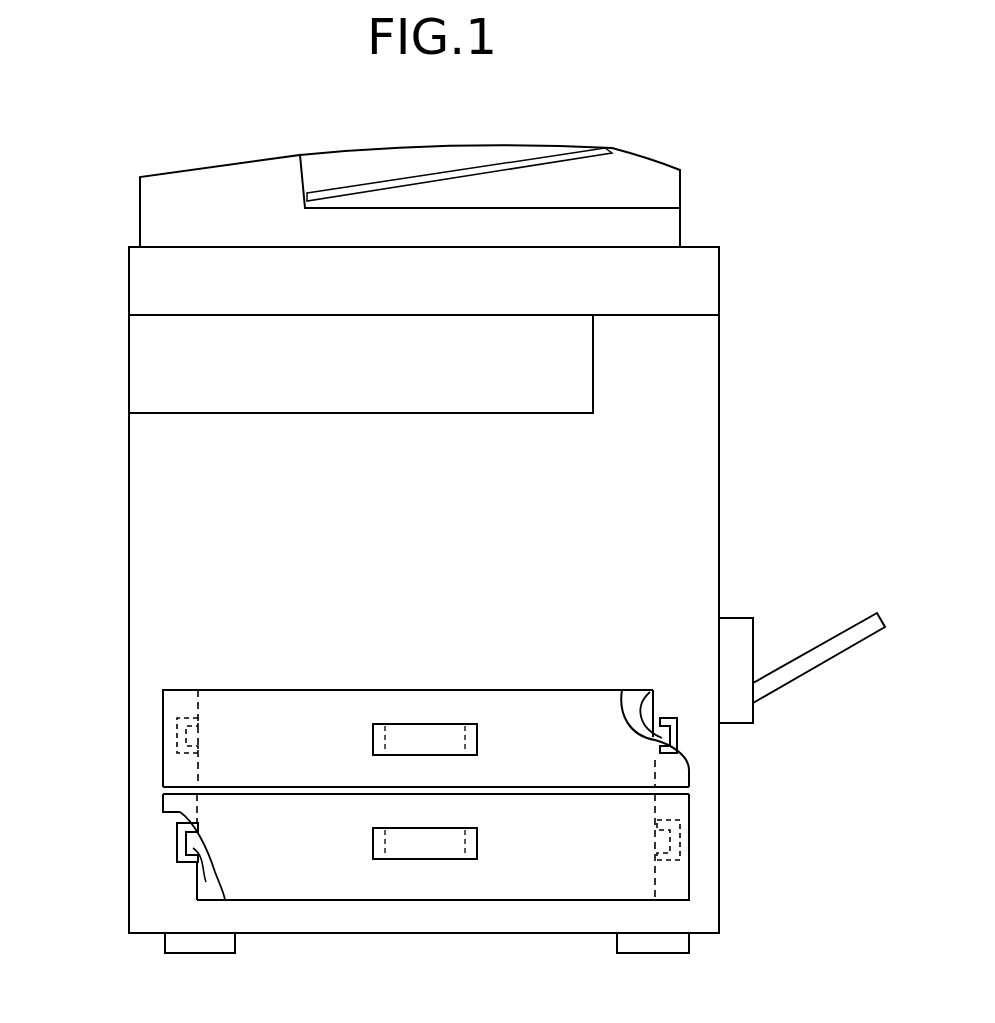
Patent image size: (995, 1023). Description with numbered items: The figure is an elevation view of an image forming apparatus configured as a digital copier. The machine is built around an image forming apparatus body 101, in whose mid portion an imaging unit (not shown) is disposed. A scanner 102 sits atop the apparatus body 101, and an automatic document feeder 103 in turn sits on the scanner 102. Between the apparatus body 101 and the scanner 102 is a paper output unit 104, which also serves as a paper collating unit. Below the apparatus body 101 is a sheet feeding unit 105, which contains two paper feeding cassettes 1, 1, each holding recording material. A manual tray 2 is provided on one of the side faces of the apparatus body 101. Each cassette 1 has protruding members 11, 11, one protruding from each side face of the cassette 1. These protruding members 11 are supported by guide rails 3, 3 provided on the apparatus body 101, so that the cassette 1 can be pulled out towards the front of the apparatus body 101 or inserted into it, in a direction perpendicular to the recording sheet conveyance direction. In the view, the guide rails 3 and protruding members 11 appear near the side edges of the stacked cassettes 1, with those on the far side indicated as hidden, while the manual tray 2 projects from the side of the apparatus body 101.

The paper feeding cassette 1 is at (326, 702).
The manual tray 2 is at (826, 642).
The guide rail 3 is at (677, 728).
The protruding member 11 is at (648, 692).
The image forming apparatus body 101 is at (153, 460).
The scanner 102 is at (720, 282).
The automatic document feeder 103 is at (668, 174).
The paper output unit 104 is at (140, 366).
The sheet feeding unit 105 is at (157, 793).